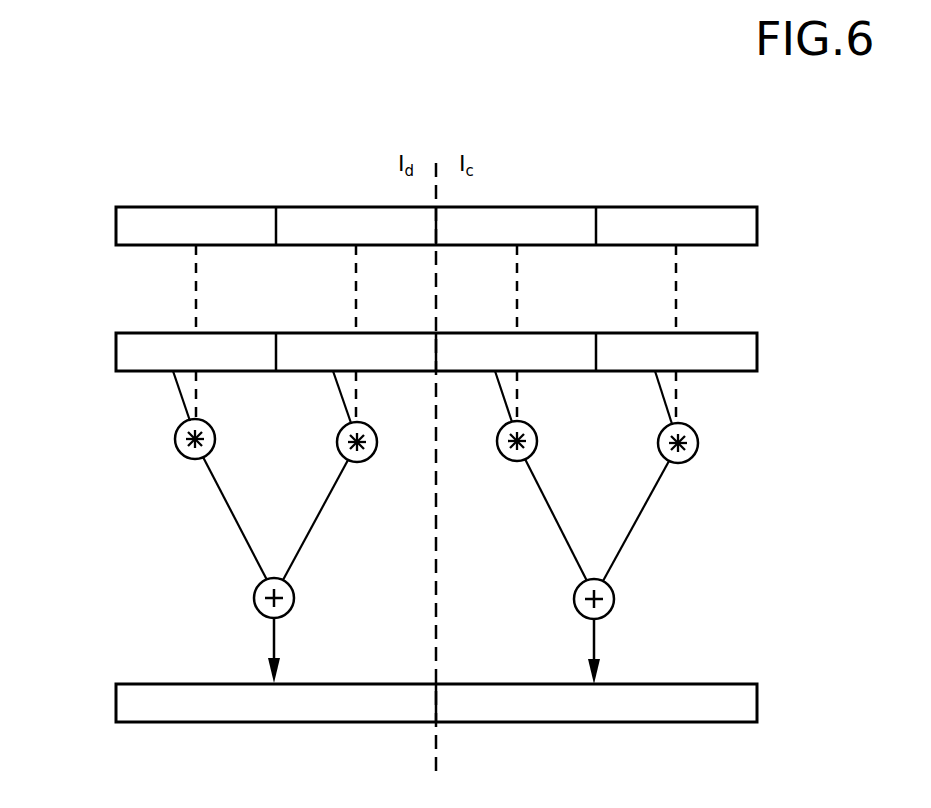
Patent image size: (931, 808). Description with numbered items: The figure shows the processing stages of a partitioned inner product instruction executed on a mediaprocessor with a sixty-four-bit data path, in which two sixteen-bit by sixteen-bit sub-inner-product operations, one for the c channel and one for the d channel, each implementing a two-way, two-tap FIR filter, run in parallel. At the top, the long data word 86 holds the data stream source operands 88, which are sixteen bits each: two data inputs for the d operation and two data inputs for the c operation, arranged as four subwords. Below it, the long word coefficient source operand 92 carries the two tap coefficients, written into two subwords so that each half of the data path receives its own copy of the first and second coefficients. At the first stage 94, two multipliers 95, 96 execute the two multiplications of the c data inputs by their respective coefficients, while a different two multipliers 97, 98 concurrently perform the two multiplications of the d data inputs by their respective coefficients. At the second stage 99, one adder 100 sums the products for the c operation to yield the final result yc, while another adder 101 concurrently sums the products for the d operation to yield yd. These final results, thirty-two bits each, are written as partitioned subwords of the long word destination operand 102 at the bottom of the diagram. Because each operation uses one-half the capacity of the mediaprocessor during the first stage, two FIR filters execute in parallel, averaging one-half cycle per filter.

The long data word 86 is at (88, 233).
The data stream source operands 88 is at (676, 207).
The long word coefficient source operand 92 is at (88, 349).
The first stage 94 is at (735, 447).
The multiplier 95 is at (504, 460).
The multiplier 96 is at (681, 462).
The multiplier 97 is at (176, 447).
The multiplier 98 is at (376, 449).
The second stage 99 is at (697, 599).
The adder 100 is at (614, 591).
The adder 101 is at (294, 596).
The long word destination operand 102 is at (88, 700).